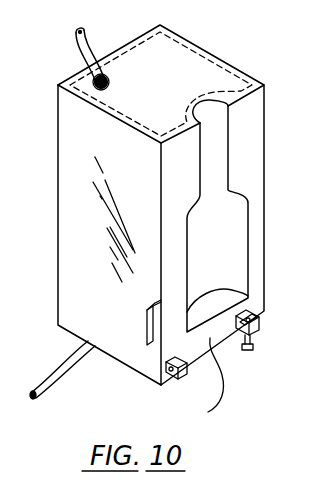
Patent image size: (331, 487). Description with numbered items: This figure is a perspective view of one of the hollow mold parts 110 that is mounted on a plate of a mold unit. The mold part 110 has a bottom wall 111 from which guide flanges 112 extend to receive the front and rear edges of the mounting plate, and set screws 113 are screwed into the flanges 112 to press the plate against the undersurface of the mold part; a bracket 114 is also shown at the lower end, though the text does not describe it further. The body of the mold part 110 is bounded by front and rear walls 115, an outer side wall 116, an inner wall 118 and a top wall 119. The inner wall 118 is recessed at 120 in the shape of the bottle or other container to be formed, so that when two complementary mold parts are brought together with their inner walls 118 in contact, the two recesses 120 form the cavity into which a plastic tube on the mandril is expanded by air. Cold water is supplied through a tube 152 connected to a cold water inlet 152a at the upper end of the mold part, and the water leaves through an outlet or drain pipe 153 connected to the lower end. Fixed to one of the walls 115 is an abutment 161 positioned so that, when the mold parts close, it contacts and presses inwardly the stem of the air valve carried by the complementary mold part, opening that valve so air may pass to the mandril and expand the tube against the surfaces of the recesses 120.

The mold part 110 is at (240, 58).
The bottom wall 111 is at (209, 380).
The guide flange 112 is at (176, 380).
The set screw 113 is at (253, 351).
The mounting bracket 114 is at (262, 324).
The front and rear wall 115 is at (68, 240).
The outer side wall 116 is at (134, 38).
The inner wall 118 is at (251, 127).
The top wall 119 is at (177, 52).
The recess 120 is at (238, 240).
The tube 152 is at (76, 42).
The cold water inlet 152a is at (110, 82).
The drain pipe 153 is at (72, 372).
The abutment 161 is at (154, 321).